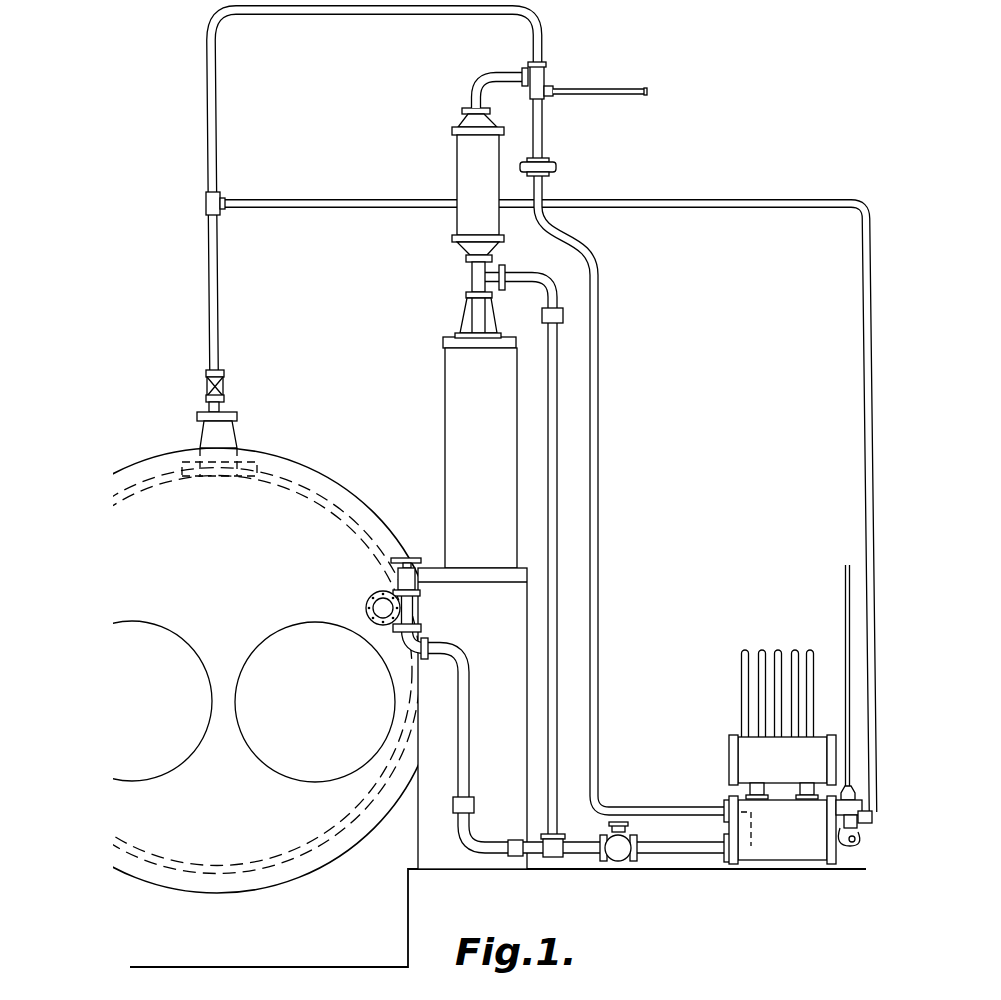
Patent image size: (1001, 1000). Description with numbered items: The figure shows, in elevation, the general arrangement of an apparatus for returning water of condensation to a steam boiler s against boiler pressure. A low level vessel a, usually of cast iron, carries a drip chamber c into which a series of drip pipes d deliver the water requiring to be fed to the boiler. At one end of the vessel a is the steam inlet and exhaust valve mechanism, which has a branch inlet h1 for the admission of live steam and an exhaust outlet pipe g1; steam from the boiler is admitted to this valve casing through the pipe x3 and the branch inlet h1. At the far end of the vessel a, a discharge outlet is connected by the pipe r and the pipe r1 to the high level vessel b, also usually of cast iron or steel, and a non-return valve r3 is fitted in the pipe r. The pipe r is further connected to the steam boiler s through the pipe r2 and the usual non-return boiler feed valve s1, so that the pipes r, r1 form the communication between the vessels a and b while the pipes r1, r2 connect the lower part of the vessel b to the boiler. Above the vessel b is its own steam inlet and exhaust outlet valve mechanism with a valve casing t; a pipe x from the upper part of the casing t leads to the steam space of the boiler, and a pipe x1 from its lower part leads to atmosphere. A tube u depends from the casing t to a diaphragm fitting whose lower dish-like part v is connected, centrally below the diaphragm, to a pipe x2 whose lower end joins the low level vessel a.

The pipe x is at (388, 17).
The pipe x1 is at (598, 89).
The pipe x2 is at (599, 268).
The pipe x3 is at (420, 209).
The valve casing t is at (548, 73).
The tube u is at (545, 139).
The lower dish-like part v is at (557, 172).
The high level vessel b is at (478, 223).
The steam boiler s is at (220, 670).
The non-return boiler feed valve s1 is at (371, 624).
The pipe r1 is at (558, 632).
The pipe r2 is at (469, 780).
The non-return valve r3 is at (620, 843).
The pipe r is at (671, 853).
The low level vessel a is at (782, 830).
The drip chamber c is at (754, 757).
The drip pipes d is at (744, 693).
The exhaust outlet pipe g1 is at (845, 618).
The branch inlet h1 is at (871, 824).